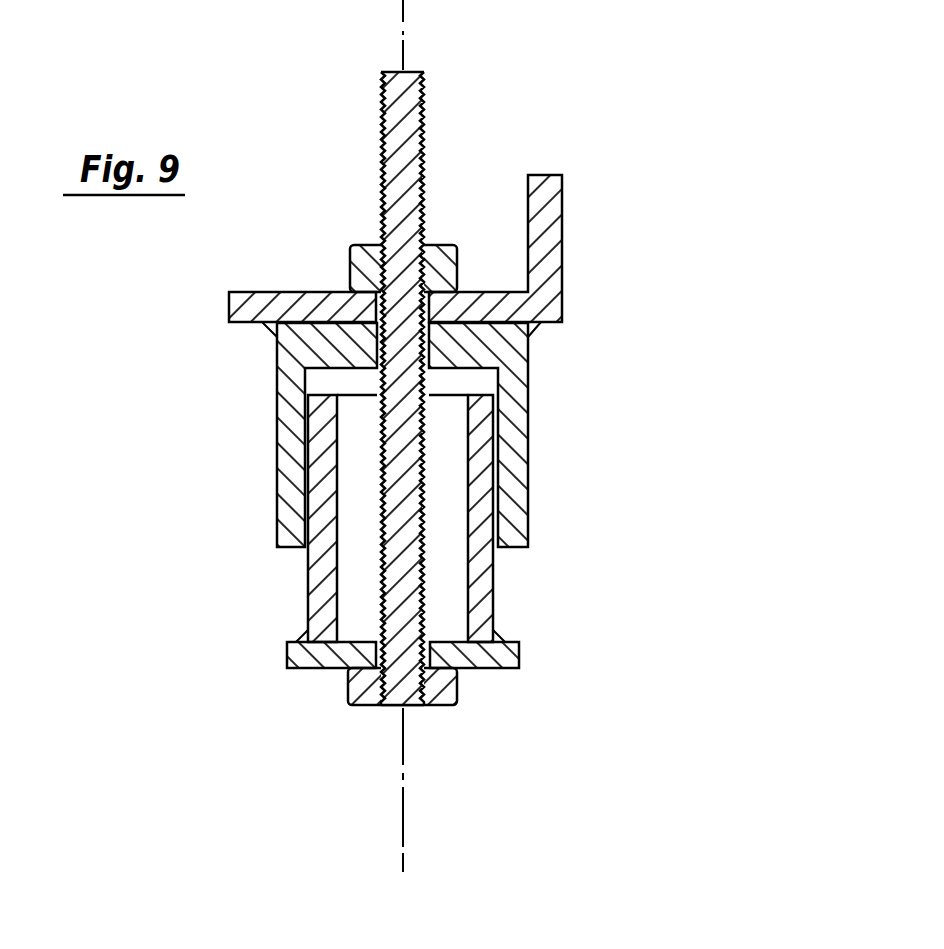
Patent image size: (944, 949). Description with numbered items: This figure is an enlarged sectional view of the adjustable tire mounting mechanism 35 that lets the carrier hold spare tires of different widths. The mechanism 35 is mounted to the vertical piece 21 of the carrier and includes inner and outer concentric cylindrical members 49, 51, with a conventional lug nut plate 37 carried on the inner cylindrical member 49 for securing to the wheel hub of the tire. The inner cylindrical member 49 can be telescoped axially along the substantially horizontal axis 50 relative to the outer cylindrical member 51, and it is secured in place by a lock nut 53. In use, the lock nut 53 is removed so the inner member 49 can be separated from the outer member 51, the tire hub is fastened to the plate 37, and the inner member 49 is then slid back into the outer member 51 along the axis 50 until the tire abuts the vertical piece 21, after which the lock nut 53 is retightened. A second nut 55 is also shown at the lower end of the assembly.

The vertical piece 21 is at (229, 304).
The tire mounting mechanism 35 is at (612, 250).
The lug nut plate 37 is at (521, 654).
The inner cylindrical member 49 is at (308, 573).
The axis 50 is at (402, 45).
The outer cylindrical member 51 is at (528, 418).
The lock nut 53 is at (441, 245).
The lower nut 55 is at (360, 688).